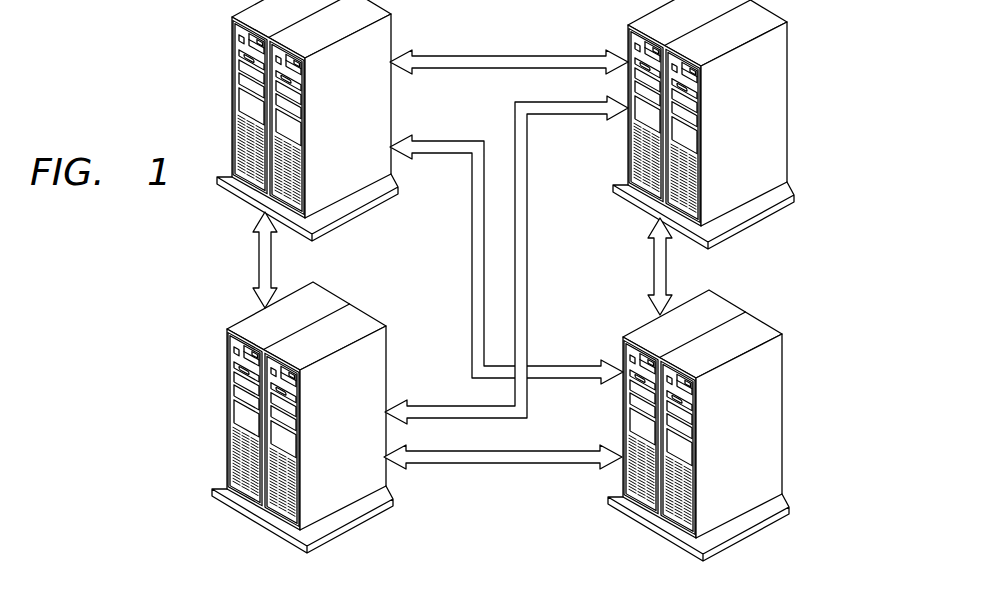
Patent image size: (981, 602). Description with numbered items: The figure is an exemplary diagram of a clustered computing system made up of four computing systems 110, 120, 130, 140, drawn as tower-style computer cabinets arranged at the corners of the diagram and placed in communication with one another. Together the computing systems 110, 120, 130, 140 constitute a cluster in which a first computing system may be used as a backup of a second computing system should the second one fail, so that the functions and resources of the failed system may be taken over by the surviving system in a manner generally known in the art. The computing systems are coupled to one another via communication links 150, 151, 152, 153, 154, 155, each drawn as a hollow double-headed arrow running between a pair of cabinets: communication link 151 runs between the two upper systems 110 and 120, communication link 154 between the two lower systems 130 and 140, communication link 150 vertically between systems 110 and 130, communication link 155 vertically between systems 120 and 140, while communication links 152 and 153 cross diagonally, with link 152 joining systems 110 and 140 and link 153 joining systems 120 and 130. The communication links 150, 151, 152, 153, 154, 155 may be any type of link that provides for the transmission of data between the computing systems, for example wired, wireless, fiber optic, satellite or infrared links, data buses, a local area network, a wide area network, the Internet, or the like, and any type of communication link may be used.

The computing system 110 is at (218, 88).
The computing system 120 is at (808, 97).
The computing system 130 is at (208, 434).
The computing system 140 is at (805, 446).
The communication link 150 is at (259, 260).
The communication link 151 is at (510, 55).
The communication link 152 is at (472, 265).
The communication link 153 is at (527, 263).
The communication link 154 is at (502, 463).
The communication link 155 is at (667, 267).